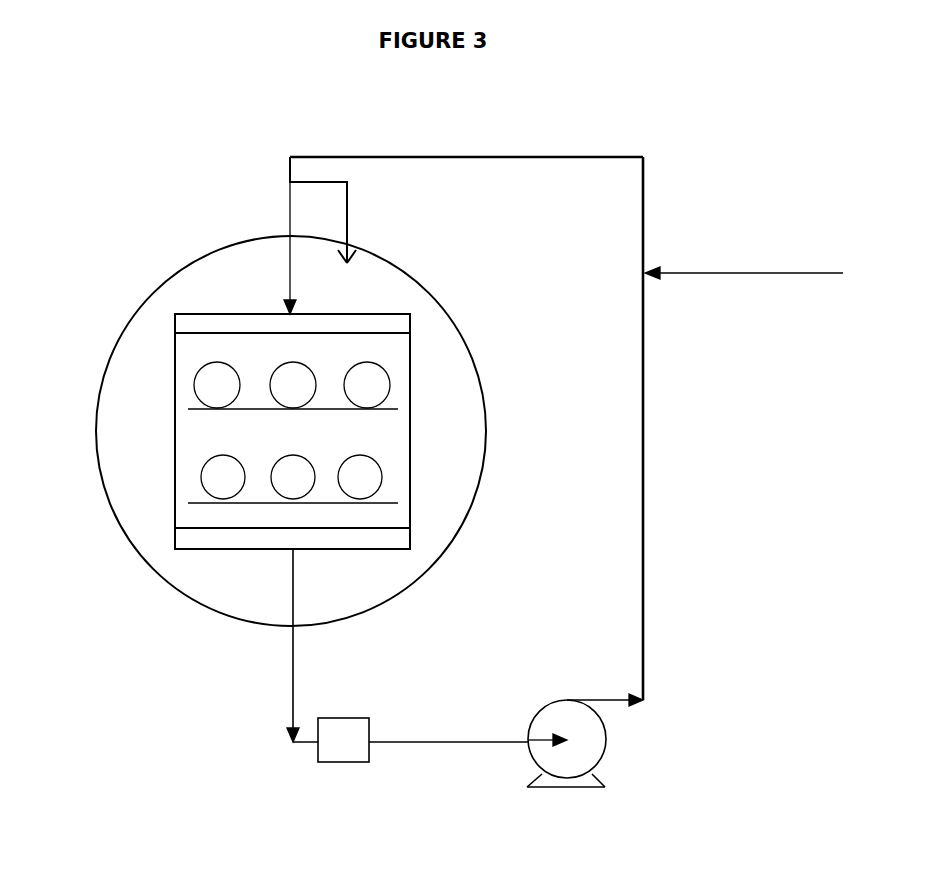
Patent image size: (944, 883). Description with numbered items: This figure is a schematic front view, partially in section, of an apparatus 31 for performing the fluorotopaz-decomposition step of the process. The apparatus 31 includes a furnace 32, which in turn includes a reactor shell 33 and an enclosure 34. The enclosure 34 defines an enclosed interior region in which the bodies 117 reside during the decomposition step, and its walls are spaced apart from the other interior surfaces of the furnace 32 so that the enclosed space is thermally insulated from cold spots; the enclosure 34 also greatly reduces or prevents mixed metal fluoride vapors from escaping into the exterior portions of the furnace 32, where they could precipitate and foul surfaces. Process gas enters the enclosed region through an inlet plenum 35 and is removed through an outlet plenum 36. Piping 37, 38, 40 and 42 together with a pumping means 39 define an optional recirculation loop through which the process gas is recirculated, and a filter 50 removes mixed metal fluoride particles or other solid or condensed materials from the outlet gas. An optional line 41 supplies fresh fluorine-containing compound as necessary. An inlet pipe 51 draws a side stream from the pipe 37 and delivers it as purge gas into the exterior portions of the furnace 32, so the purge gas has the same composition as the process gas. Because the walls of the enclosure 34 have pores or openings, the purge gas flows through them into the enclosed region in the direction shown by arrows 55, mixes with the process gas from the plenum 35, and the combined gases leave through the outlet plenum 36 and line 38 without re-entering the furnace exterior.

The apparatus 31 is at (712, 124).
The furnace 32 is at (120, 629).
The reactor shell 33 is at (126, 294).
The enclosure 34 is at (422, 434).
The inlet plenum 35 is at (372, 322).
The outlet plenum 36 is at (350, 540).
The pipe 37 is at (290, 198).
The line 38 is at (290, 680).
The pumping means 39 is at (596, 740).
The piping 40 is at (645, 560).
The optional line 41 is at (744, 263).
The piping 42 is at (500, 160).
The filter 50 is at (333, 753).
The inlet pipe 51 is at (328, 172).
The arrows 55 is at (417, 520).
The bodies 117 is at (341, 458).